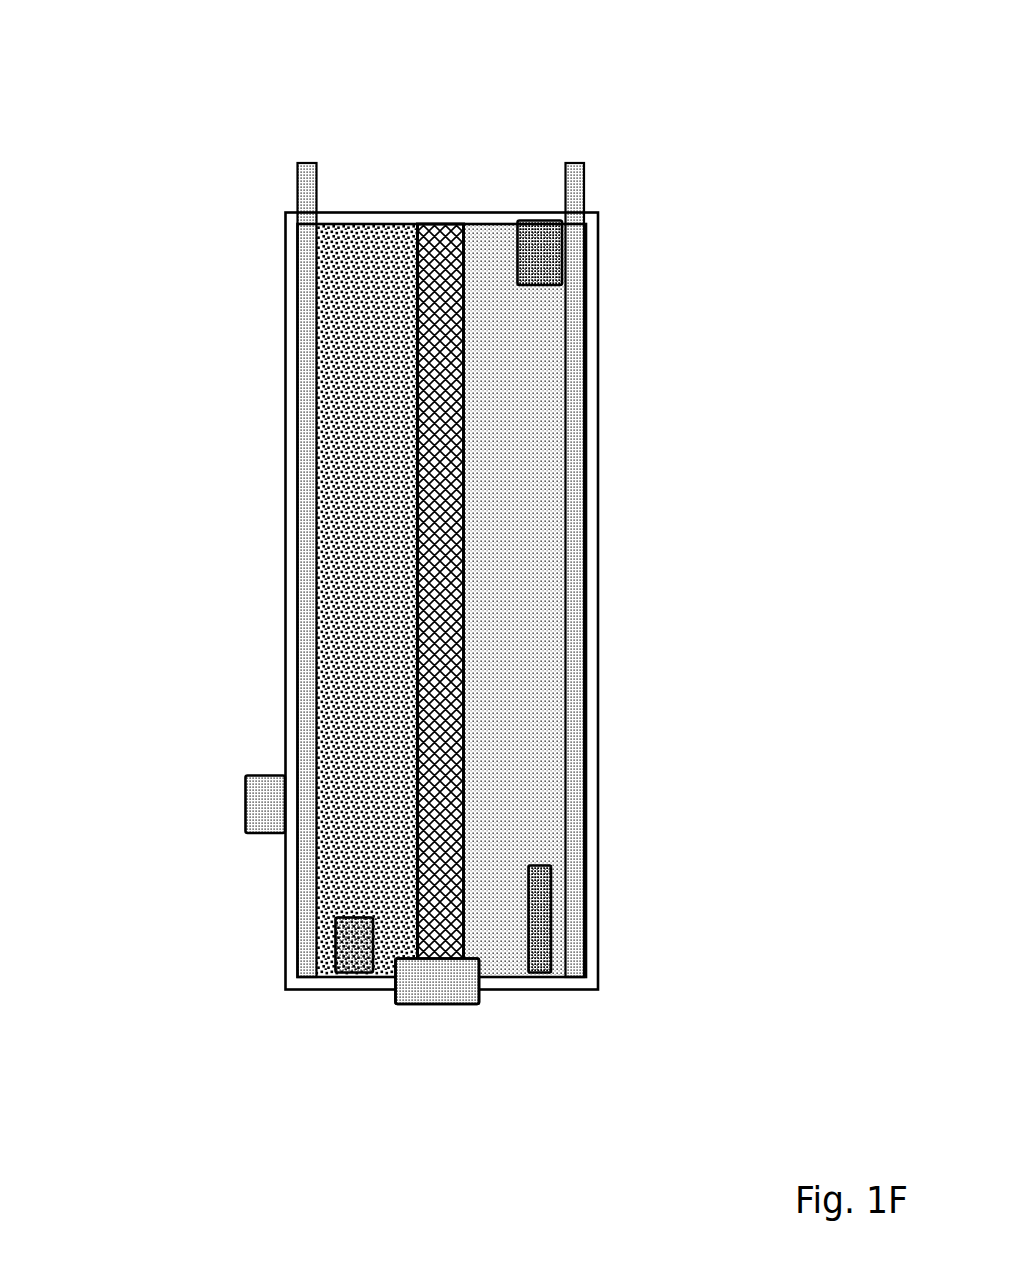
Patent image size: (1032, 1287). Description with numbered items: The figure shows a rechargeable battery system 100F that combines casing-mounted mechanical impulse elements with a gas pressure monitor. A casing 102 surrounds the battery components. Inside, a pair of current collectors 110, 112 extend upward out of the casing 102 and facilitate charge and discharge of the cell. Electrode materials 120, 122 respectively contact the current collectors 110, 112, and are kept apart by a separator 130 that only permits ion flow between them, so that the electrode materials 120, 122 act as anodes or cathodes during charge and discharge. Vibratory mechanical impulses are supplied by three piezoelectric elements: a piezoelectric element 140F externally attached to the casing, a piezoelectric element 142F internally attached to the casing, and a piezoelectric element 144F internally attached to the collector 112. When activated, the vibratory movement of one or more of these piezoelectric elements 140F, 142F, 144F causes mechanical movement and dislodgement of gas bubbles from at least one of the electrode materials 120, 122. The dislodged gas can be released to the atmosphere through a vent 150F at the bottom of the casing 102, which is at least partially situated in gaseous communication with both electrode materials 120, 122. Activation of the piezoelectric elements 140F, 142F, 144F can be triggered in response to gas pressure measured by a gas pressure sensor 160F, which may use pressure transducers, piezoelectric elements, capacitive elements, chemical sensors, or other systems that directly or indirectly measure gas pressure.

The rechargeable battery system 100F is at (125, 83).
The casing 102 is at (280, 502).
The current collector 110 is at (290, 196).
The current collector 112 is at (590, 193).
The electrode material 120 is at (352, 256).
The electrode material 122 is at (497, 256).
The separator 130 is at (433, 256).
The piezoelectric element 140F is at (266, 800).
The piezoelectric element 142F is at (333, 950).
The piezoelectric element 144F is at (545, 266).
The vent 150F is at (433, 1010).
The gas pressure sensor 160F is at (553, 985).